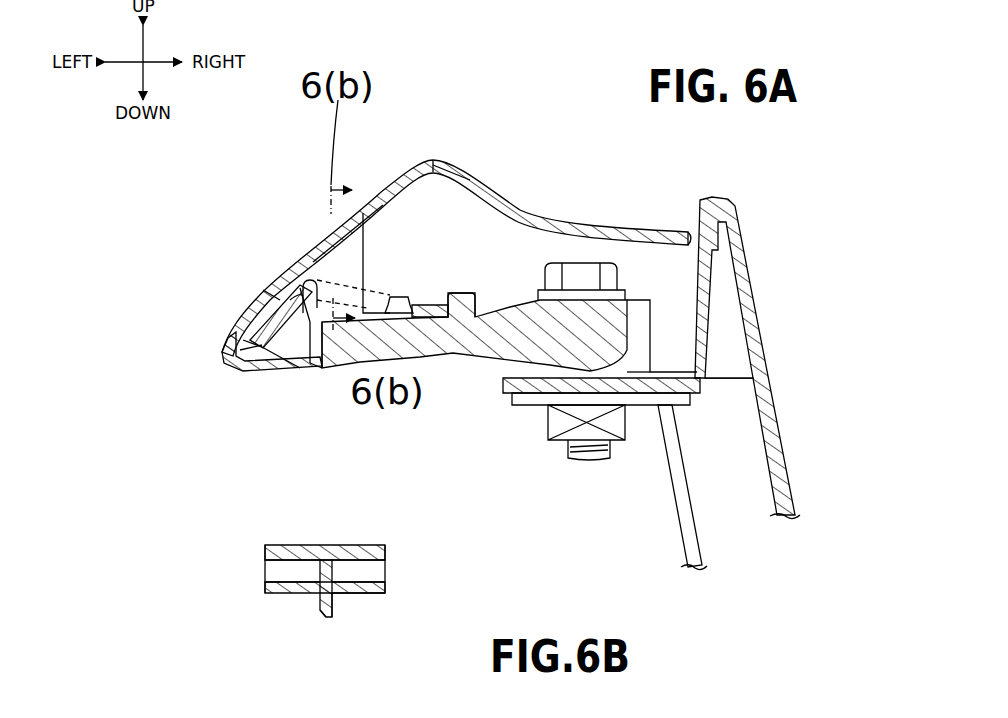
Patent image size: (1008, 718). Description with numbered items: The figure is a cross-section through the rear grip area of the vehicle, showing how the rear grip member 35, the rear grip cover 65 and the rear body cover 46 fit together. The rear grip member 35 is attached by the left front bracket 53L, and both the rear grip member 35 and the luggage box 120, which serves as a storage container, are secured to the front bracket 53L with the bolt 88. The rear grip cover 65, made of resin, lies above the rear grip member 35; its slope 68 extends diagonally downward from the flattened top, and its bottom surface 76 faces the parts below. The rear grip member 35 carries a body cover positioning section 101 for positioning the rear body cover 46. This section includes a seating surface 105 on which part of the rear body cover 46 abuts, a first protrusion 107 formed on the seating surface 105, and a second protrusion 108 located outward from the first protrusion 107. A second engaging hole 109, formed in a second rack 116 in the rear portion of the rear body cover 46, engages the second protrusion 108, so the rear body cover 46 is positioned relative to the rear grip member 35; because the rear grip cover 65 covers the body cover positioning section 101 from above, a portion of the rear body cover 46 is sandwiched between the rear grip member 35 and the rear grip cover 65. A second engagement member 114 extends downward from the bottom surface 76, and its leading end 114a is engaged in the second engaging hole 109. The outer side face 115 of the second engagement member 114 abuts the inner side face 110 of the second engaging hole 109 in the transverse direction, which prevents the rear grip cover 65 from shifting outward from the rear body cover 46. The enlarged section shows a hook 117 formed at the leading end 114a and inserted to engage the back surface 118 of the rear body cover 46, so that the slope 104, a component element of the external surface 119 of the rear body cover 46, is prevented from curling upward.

In FIG. 6A, the rear grip member 35 is at (266, 382).
In FIG. 6A, the rear body cover 46 is at (253, 329).
In FIG. 6B, the rear body cover 46 is at (366, 600).
In FIG. 6A, the left front bracket 53L is at (679, 486).
In FIG. 6A, the rear grip cover 65 is at (469, 164).
In FIG. 6B, the rear grip cover 65 is at (382, 541).
In FIG. 6A, the slope 68 is at (320, 262).
In FIG. 6A, the bottom surface 76 is at (298, 272).
In FIG. 6A, the bolt 88 is at (582, 276).
In FIG. 6A, the body cover positioning section 101 is at (432, 236).
In FIG. 6B, the slope 104 is at (316, 546).
In FIG. 6A, the seating surface 105 is at (512, 304).
In FIG. 6A, the first protrusion 107 is at (461, 296).
In FIG. 6A, the second protrusion 108 is at (399, 296).
In FIG. 6A, the second engaging hole 109 is at (432, 170).
In FIG. 6B, the second engaging hole 109 is at (335, 596).
In FIG. 6A, the inner side face 110 is at (286, 372).
In FIG. 6A, the second engagement member 114 is at (328, 262).
In FIG. 6A, the leading end 114a is at (318, 368).
In FIG. 6B, the leading end 114a is at (328, 620).
In FIG. 6A, the outer side face 115 is at (300, 292).
In FIG. 6A, the second rack 116 is at (392, 298).
In FIG. 6B, the second rack 116 is at (362, 575).
In FIG. 6B, the hook 117 is at (318, 606).
In FIG. 6B, the back surface 118 is at (286, 594).
In FIG. 6B, the external surface 119 is at (351, 545).
In FIG. 6A, the luggage box 120 is at (744, 238).